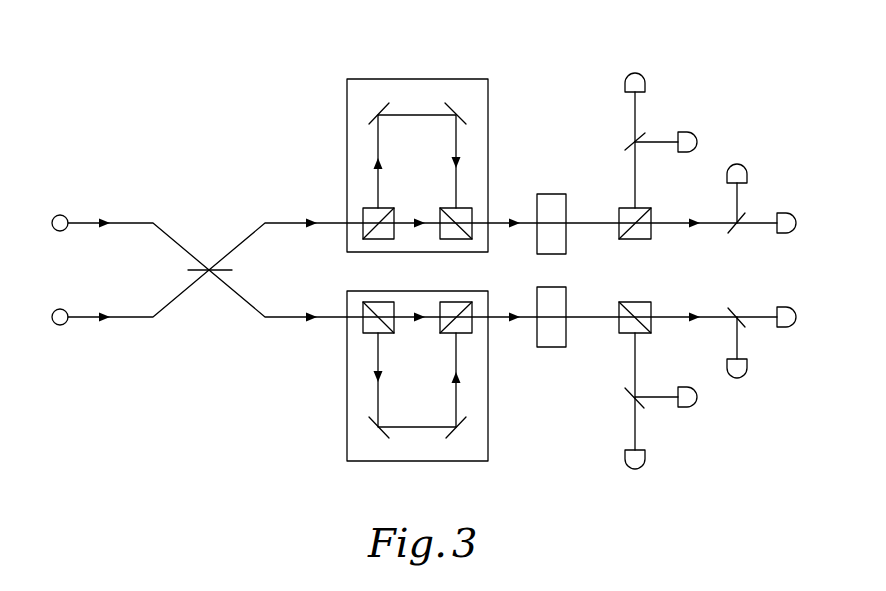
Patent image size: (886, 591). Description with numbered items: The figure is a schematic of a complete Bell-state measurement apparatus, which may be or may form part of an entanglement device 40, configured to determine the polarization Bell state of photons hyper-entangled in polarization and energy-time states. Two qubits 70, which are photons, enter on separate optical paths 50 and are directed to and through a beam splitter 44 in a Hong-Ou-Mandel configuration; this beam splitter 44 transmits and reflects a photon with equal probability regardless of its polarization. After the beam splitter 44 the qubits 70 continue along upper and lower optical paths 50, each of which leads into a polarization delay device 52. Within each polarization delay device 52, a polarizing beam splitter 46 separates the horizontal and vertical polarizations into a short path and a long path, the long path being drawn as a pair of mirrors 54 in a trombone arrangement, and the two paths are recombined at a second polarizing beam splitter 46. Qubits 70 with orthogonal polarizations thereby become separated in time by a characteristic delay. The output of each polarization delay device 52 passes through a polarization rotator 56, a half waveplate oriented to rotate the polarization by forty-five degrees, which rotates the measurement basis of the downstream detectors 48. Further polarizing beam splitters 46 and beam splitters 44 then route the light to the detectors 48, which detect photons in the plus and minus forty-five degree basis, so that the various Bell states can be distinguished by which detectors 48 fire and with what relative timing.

The entanglement device 40 is at (190, 40).
The beam splitter 44 is at (188, 270).
The polarizing beam splitter 46 is at (380, 240).
The detector 48 is at (626, 85).
The optical path 50 is at (132, 222).
The polarization delay device 52 is at (347, 149).
The mirror 54 is at (368, 122).
The polarization rotator 56 is at (566, 243).
The qubit 70 is at (59, 214).